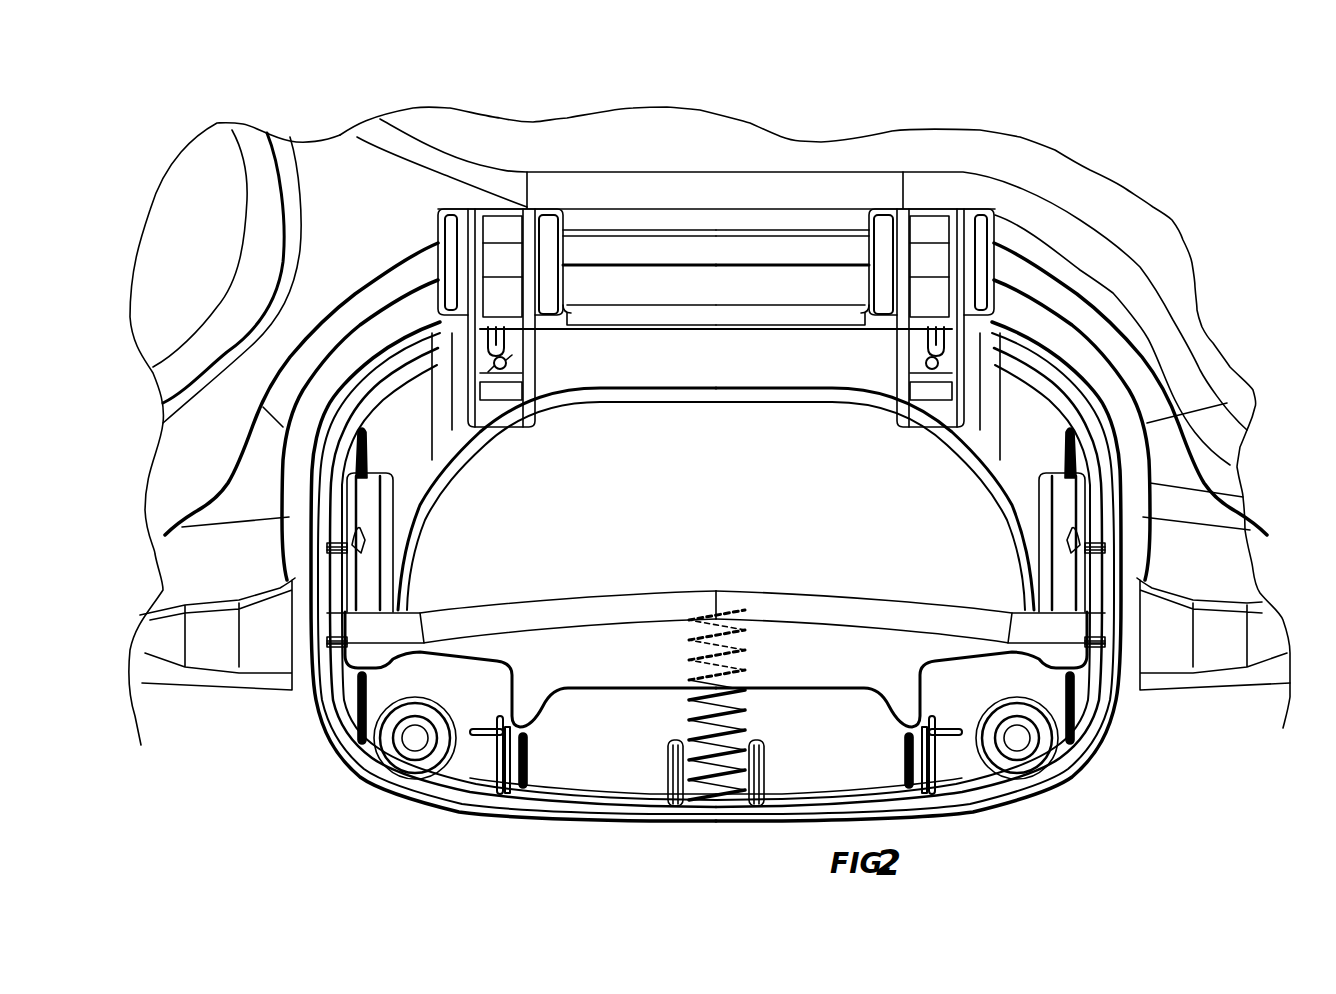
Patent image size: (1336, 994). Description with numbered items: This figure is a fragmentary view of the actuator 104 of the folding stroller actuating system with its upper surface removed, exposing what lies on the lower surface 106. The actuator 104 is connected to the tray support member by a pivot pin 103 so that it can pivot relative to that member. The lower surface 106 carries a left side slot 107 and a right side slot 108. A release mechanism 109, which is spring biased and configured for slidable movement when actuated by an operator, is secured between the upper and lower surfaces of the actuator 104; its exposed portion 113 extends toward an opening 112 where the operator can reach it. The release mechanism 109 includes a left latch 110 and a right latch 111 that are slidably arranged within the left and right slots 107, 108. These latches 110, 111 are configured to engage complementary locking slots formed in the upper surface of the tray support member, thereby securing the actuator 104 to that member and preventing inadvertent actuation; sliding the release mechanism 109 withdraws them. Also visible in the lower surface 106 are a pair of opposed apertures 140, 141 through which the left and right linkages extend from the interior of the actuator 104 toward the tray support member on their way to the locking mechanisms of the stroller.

The pivot pin 103 is at (930, 258).
The actuator 104 is at (1091, 720).
The lower surface 106 is at (490, 770).
The left side slot 107 is at (360, 505).
The right side slot 108 is at (1073, 508).
The release mechanism 109 is at (952, 795).
The left latch 110 is at (352, 542).
The right latch 111 is at (1077, 540).
The opening 112 is at (983, 585).
The exposed portion 113 is at (600, 610).
The aperture 140 is at (495, 358).
The aperture 141 is at (993, 282).